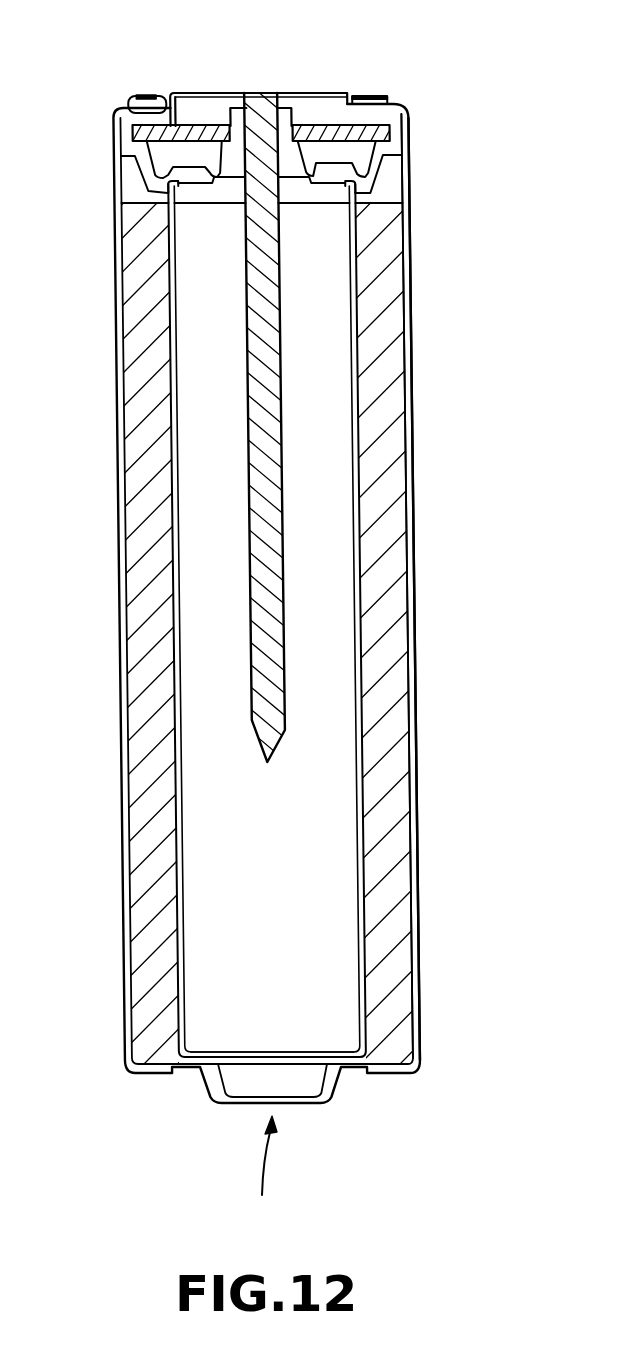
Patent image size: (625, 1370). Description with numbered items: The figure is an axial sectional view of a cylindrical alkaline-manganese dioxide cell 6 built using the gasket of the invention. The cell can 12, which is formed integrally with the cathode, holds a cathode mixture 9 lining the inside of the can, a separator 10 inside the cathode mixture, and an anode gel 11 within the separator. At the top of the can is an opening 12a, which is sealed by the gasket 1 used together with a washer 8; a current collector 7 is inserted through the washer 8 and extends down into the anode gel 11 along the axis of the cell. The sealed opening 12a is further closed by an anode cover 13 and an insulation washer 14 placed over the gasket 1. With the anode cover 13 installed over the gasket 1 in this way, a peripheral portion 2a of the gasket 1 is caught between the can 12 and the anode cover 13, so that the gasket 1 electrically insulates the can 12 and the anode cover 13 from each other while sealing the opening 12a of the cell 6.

The gasket 1 is at (395, 147).
The gasket 2a is at (132, 93).
The cylindrical alkaline-manganese dioxide cell 6 is at (266, 1172).
The current collector 7 is at (258, 605).
The washer 8 is at (133, 131).
The cathode mixture 9 is at (390, 643).
The separator 10 is at (362, 780).
The anode gel 11 is at (330, 850).
The cell can 12 is at (407, 278).
The opening 12a is at (153, 93).
The anode cover 13 is at (256, 92).
The insulation washer 14 is at (362, 94).